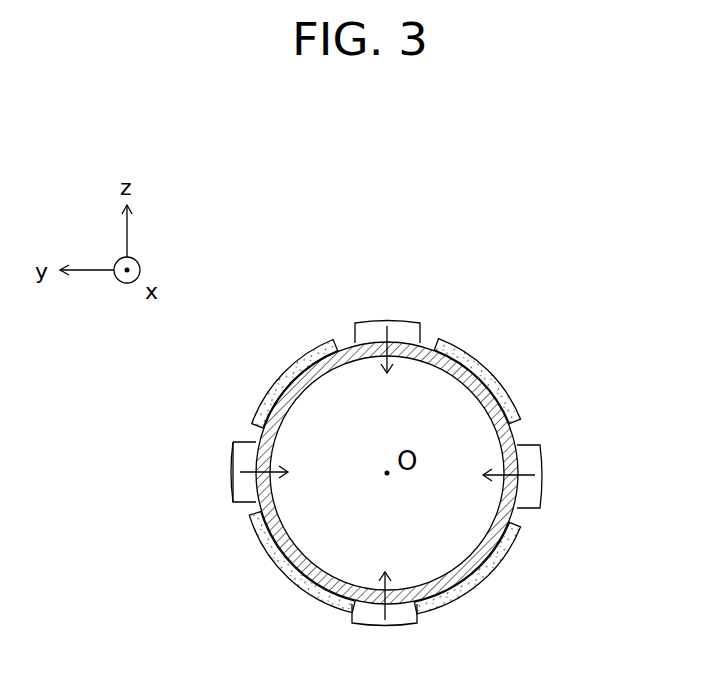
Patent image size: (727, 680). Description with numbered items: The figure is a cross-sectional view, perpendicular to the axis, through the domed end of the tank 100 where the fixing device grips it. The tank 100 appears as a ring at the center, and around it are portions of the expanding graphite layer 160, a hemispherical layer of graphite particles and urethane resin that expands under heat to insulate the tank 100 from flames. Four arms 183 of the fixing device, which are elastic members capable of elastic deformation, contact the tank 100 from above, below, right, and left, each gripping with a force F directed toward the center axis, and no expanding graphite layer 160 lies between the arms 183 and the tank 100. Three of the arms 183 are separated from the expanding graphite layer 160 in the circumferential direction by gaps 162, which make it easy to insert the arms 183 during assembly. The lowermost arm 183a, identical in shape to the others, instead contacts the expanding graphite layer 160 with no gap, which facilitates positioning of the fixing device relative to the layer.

The tank 100 is at (475, 370).
The expanding graphite layer 160 is at (285, 378).
The gaps 162 is at (346, 336).
The arms 183 is at (404, 320).
The arm 183a is at (405, 618).